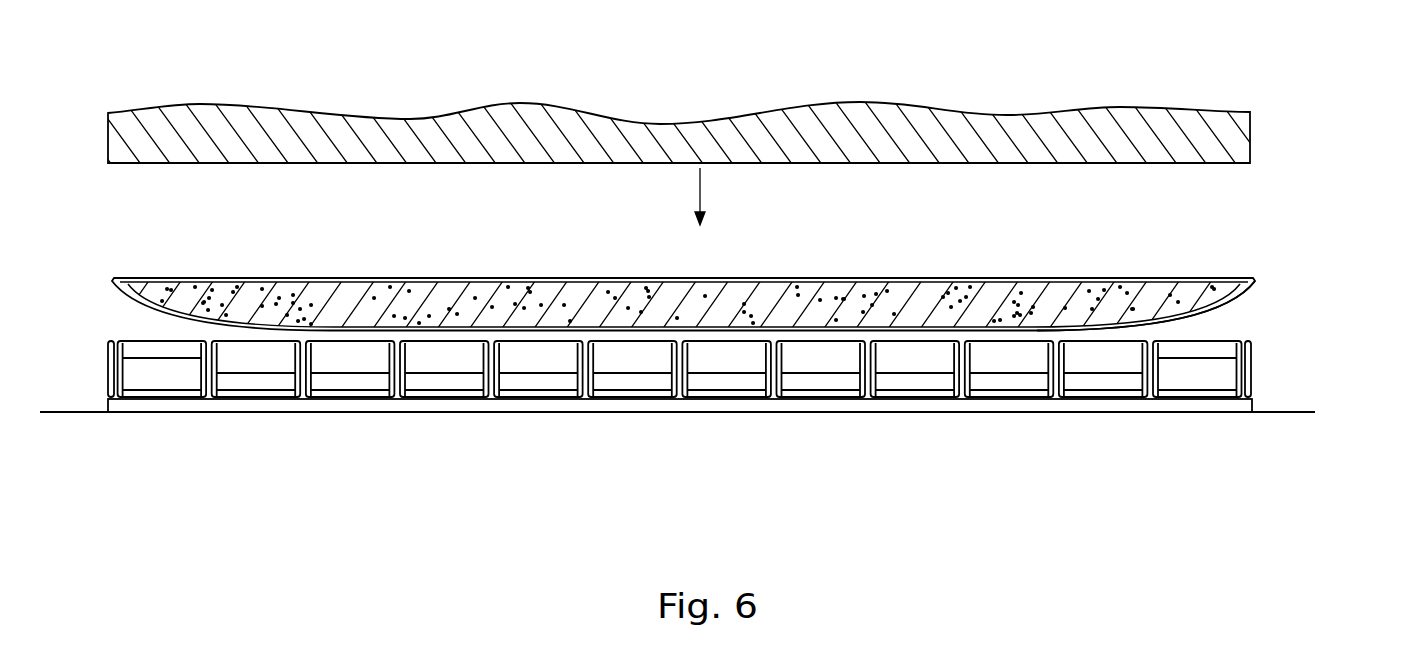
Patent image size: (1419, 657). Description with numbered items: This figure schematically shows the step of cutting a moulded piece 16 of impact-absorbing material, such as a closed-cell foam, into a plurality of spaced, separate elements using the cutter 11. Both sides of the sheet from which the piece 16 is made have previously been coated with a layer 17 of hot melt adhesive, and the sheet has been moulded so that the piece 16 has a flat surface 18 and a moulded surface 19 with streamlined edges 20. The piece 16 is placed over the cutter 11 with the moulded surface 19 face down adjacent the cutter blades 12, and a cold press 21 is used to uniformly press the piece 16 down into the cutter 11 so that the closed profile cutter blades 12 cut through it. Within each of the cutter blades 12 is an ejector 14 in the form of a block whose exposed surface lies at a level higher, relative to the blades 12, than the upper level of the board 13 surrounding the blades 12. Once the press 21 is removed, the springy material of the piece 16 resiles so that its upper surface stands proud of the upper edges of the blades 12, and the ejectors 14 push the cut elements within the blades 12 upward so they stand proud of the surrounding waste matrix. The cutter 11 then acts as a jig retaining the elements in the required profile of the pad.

The cutter 11 is at (761, 395).
The cutter blades 12 is at (523, 340).
The board 13 is at (297, 407).
The ejector 14 is at (1078, 382).
The piece of impact-absorbing material 16 is at (674, 348).
The layer of hot melt adhesive 17 is at (952, 280).
The flat surface 18 is at (165, 280).
The moulded surface 19 is at (172, 312).
The streamlined edges 20 is at (1200, 317).
The cold press 21 is at (1252, 136).